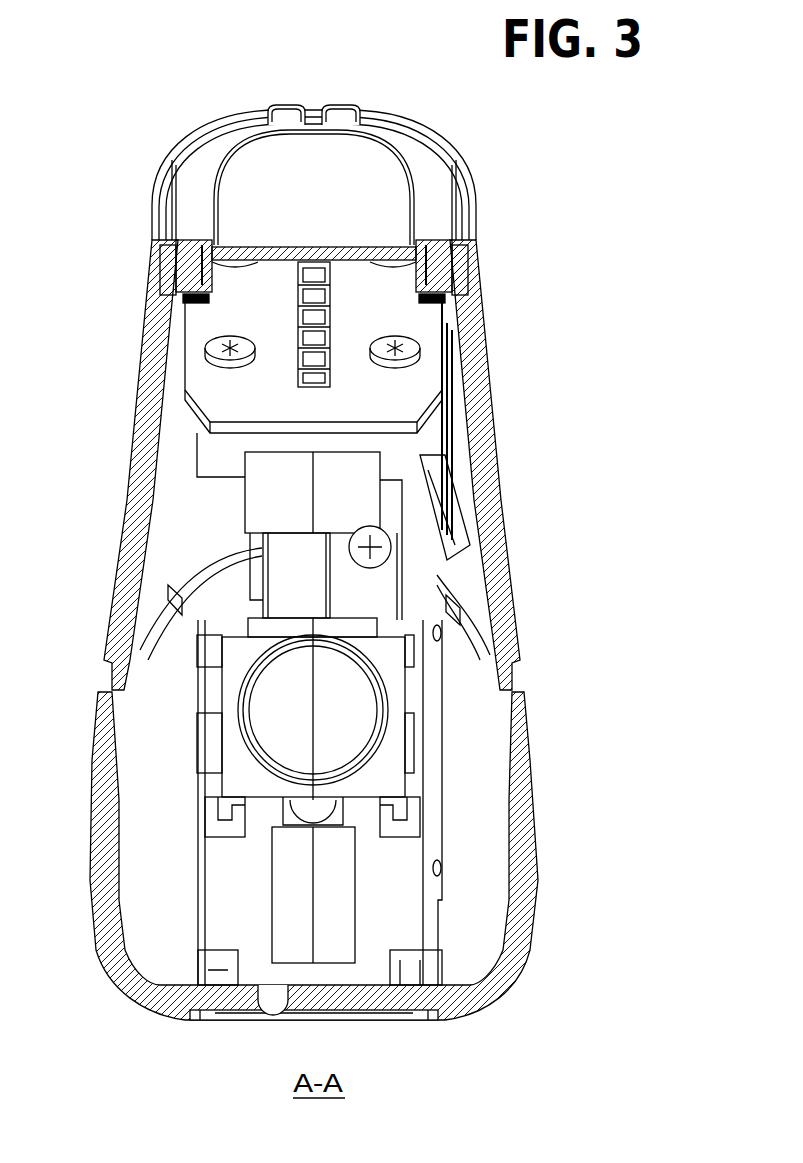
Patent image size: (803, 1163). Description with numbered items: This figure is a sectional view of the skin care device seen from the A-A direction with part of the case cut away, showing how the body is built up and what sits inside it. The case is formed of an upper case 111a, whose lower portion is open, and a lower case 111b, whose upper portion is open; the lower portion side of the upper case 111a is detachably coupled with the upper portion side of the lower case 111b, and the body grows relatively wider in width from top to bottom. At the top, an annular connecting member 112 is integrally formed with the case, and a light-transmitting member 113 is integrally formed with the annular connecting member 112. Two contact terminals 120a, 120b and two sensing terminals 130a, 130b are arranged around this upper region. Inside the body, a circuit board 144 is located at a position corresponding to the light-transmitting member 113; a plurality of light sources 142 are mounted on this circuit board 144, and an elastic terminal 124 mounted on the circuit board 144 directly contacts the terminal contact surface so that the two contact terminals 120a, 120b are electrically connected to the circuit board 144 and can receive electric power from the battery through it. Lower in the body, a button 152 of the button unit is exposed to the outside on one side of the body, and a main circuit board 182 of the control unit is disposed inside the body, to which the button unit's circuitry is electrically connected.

The upper case 111a is at (488, 455).
The lower case 111b is at (532, 888).
The annular connecting member 112 is at (462, 271).
The light-transmitting member 113 is at (383, 160).
The contact terminal 120a is at (456, 197).
The contact terminal 120b is at (172, 197).
The elastic terminal 124 is at (440, 318).
The sensing terminal 130a is at (343, 104).
The sensing terminal 130b is at (283, 104).
The light source 142 is at (300, 312).
The circuit board 144 is at (417, 385).
The button 152 is at (350, 703).
The main circuit board 182 is at (262, 550).